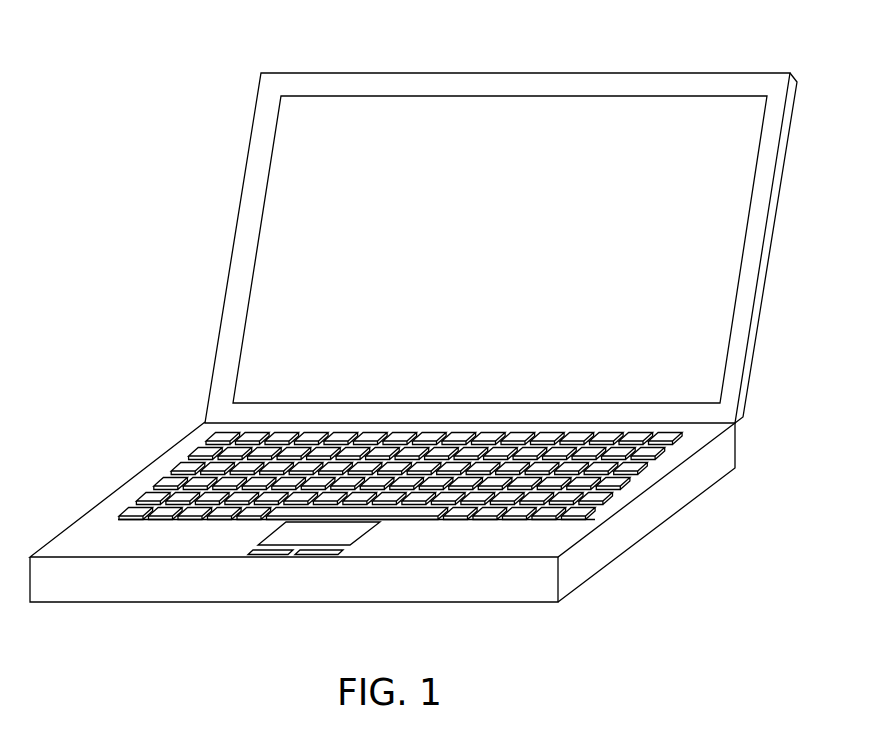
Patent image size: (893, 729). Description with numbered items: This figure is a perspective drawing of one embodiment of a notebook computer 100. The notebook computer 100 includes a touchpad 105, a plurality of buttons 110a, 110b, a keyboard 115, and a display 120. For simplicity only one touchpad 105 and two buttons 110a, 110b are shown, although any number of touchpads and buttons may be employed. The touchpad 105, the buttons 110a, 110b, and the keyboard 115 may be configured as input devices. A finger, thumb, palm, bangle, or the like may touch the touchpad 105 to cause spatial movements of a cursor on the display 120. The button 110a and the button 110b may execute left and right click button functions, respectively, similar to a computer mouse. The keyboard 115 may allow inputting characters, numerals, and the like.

The notebook computer 100 is at (91, 47).
The touchpad 105 is at (284, 538).
The button 110a is at (250, 556).
The button 110b is at (336, 556).
The keyboard 115 is at (182, 462).
The display 120 is at (498, 285).